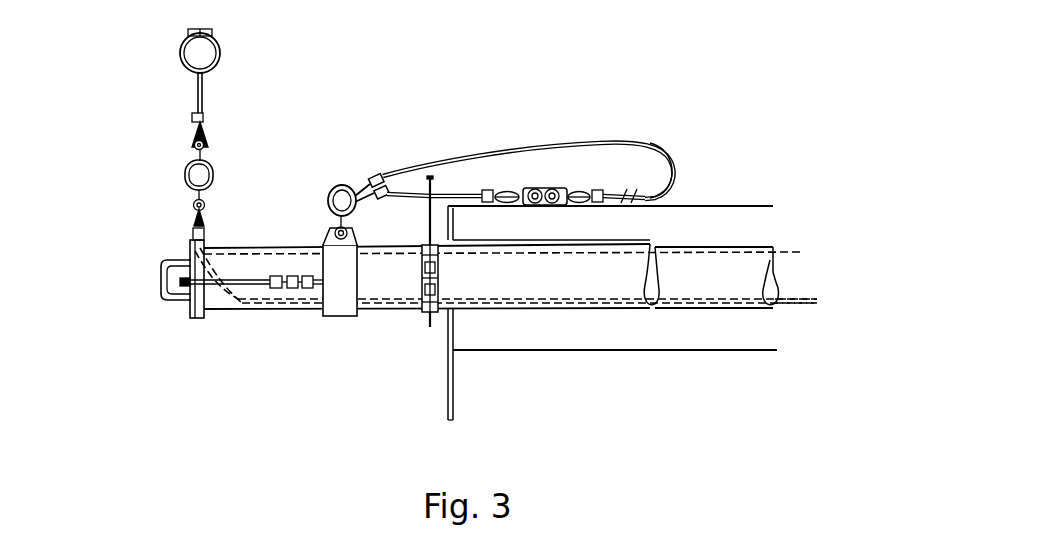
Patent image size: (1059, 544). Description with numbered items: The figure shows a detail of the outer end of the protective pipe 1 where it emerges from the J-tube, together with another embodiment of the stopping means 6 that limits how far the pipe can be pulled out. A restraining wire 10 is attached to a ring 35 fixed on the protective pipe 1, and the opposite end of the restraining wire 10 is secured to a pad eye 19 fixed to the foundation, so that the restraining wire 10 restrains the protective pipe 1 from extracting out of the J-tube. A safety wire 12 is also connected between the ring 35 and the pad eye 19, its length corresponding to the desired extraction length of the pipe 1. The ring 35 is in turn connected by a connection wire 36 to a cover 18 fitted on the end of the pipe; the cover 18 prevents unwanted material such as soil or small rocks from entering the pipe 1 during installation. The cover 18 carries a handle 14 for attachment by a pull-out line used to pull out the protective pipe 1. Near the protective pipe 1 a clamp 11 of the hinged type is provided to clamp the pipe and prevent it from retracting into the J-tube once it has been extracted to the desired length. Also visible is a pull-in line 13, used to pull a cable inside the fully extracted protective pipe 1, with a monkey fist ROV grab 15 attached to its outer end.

The protective pipe 1 is at (245, 308).
The stopping means 6 is at (432, 134).
The restraining wire 10 is at (447, 193).
The clamp 11 is at (428, 318).
The safety wire 12 is at (659, 146).
The pull-in line 13 is at (805, 306).
The handle 14 is at (162, 297).
The monkey fist ROV grab 15 is at (192, 56).
The cover 18 is at (188, 318).
The pad eye 19 is at (553, 188).
The ring 35 is at (327, 313).
The connection wire 36 is at (227, 283).